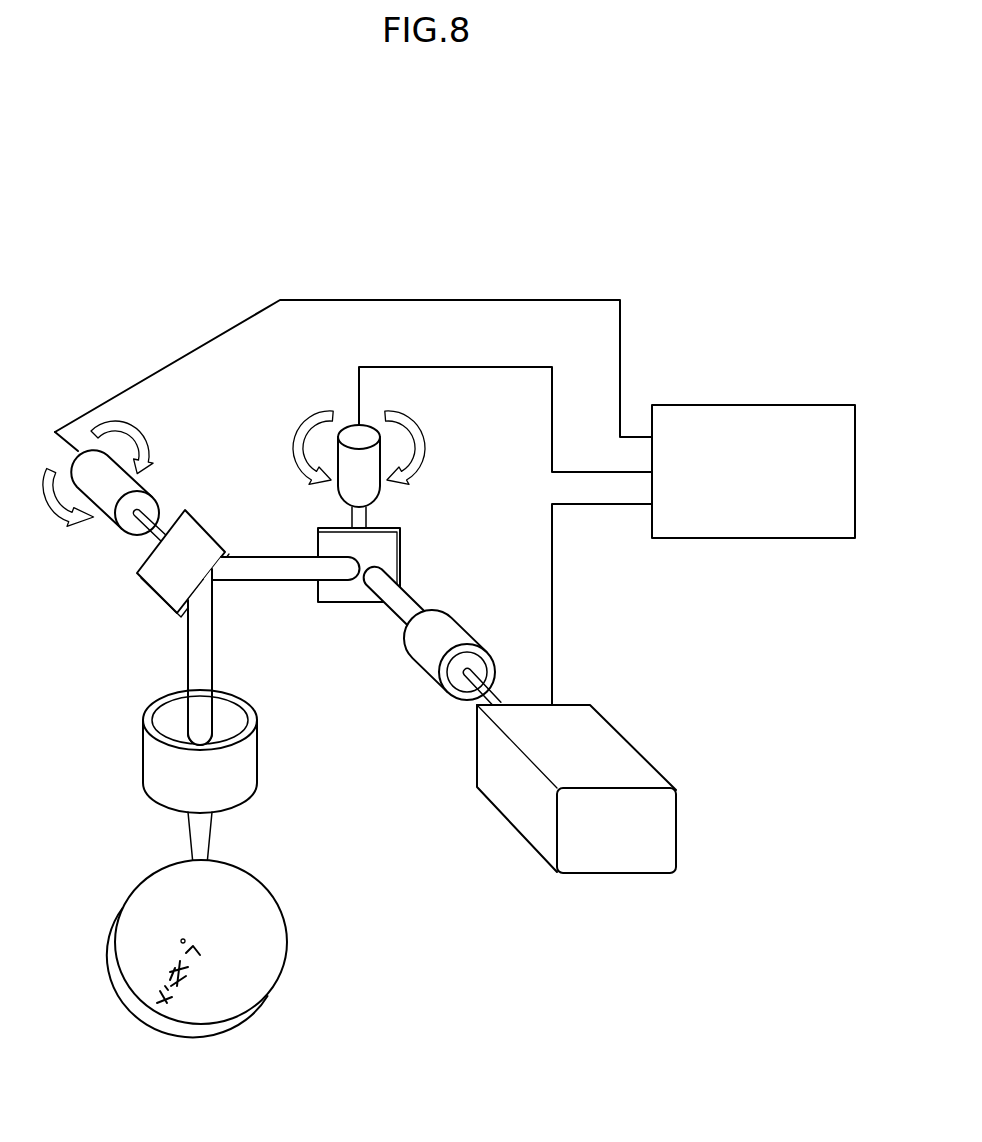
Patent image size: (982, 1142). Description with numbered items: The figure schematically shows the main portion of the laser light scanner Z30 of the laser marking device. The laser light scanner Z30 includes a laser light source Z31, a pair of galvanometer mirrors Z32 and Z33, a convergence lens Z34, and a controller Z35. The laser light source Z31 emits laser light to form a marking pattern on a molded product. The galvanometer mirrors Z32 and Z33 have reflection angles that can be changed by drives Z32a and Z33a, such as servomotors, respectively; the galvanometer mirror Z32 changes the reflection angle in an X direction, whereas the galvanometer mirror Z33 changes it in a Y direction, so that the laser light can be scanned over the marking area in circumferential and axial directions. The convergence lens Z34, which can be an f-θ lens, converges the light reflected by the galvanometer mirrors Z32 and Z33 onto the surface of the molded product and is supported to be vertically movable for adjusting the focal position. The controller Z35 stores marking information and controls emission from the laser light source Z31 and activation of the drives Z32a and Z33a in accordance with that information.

The laser light scanner Z30 is at (420, 276).
The laser light source Z31 is at (508, 820).
The galvanometer mirror Z32 is at (152, 588).
The drive Z32a is at (150, 493).
The galvanometer mirror Z33 is at (352, 603).
The drive Z33a is at (380, 503).
The convergence lens Z34 is at (143, 755).
The controller Z35 is at (738, 404).